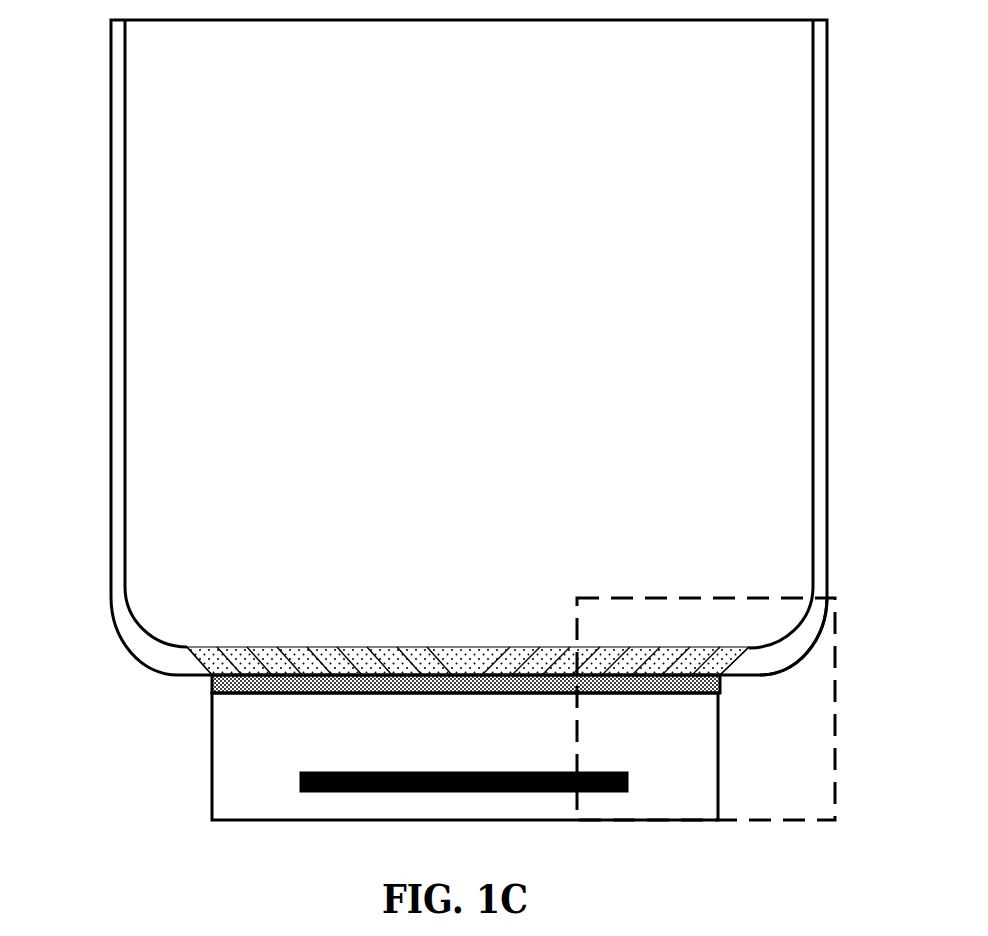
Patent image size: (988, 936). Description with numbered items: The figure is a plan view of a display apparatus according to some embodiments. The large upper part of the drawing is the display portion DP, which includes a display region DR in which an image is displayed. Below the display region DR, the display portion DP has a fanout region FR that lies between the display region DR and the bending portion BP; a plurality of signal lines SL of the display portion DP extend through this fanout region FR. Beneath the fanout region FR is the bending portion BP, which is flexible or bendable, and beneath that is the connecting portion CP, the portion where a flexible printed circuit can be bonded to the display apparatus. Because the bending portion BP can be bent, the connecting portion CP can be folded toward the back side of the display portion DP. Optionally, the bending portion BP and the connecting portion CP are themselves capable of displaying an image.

The display portion DP is at (107, 20).
The display region DR is at (469, 300).
The signal lines SL is at (444, 663).
The fanout region FR is at (735, 662).
The bending portion BP is at (720, 686).
The connecting portion CP is at (718, 770).